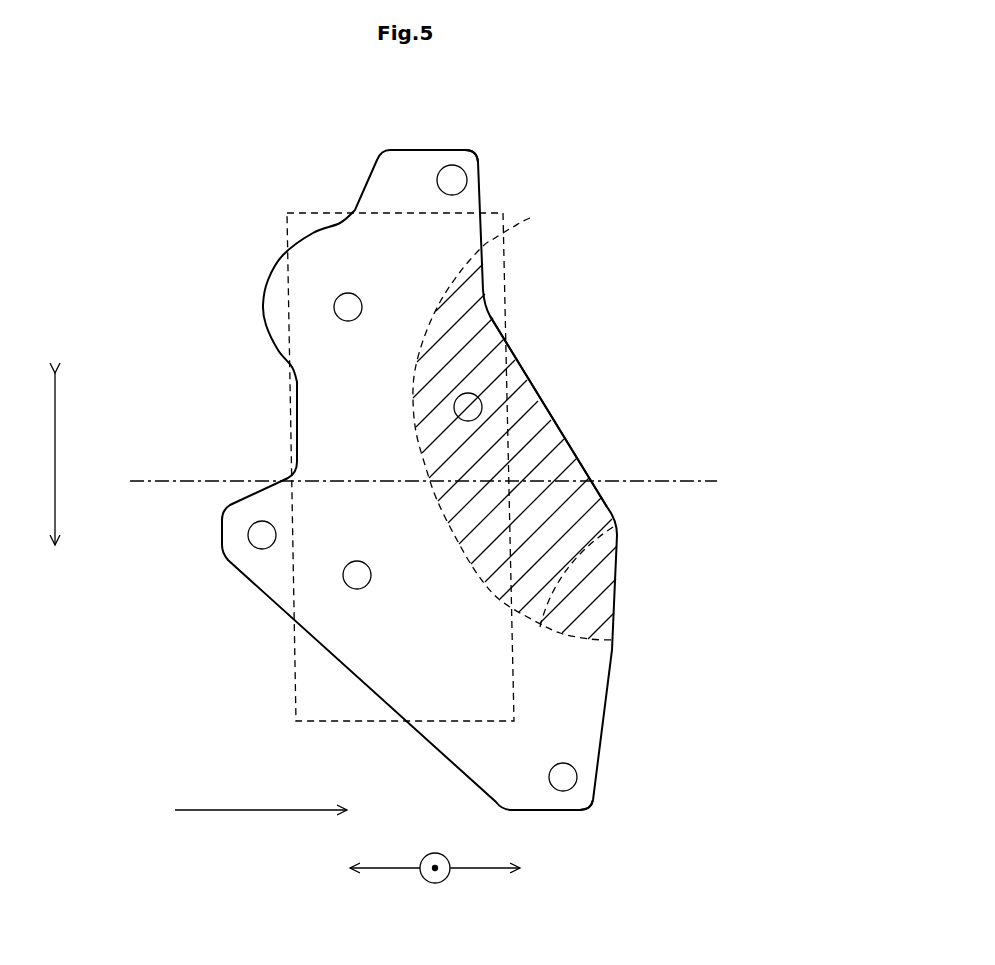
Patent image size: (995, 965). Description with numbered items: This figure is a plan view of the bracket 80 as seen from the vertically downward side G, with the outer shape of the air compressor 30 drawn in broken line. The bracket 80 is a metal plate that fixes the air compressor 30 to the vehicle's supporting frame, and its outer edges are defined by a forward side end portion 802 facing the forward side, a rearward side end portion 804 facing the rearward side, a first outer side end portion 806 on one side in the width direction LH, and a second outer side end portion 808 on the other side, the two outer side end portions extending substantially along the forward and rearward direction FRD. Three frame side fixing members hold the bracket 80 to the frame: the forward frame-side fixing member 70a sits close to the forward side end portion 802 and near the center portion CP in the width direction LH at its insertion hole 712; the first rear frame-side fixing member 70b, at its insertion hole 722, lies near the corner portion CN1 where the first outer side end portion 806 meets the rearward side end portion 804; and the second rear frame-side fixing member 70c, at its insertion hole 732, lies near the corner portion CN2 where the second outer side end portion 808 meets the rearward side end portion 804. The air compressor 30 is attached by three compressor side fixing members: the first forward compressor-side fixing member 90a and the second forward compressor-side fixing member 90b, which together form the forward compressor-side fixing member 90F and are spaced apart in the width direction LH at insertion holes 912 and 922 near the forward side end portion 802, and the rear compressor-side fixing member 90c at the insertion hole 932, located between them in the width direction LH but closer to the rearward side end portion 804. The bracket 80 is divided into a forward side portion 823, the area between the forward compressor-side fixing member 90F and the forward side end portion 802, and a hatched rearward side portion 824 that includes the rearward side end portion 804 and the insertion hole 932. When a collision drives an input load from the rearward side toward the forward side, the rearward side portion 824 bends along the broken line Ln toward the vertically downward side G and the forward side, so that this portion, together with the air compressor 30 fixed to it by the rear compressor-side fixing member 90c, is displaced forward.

The bracket 80 is at (362, 158).
The second outer side end portion 808 is at (408, 148).
The third fastening hole 732 is at (433, 138).
The second rear frame-side fixing member 70c is at (450, 178).
The corner portion CN2 is at (472, 155).
The air compressor 30 is at (530, 218).
The rearward side portion 824 is at (462, 333).
The insertion hole 932 is at (555, 377).
The rear compressor-side fixing member 90c is at (468, 407).
The rearward side end portion 804 is at (568, 450).
The center portion CP is at (705, 480).
The line Ln is at (613, 527).
The first positioning hole 912 is at (230, 285).
The first forward compressor-side fixing member 90a is at (230, 285).
The forward compressor-side fixing member 90F is at (348, 307).
The forward side portion 823 is at (323, 400).
The forward side end portion 802 is at (293, 422).
The first fastening hole 712 is at (184, 527).
The forward frame-side fixing member 70a is at (262, 535).
The second positioning hole 922 is at (250, 597).
The second forward compressor-side fixing member 90b is at (357, 575).
The second fastening hole 722 is at (641, 763).
The first rear frame-side fixing member 70b is at (563, 777).
The corner portion CN1 is at (587, 807).
The first outer side end portion 806 is at (548, 812).
The width direction LH is at (72, 459).
The forward and rearward direction FRD is at (261, 794).
The vertically downward side G is at (434, 883).